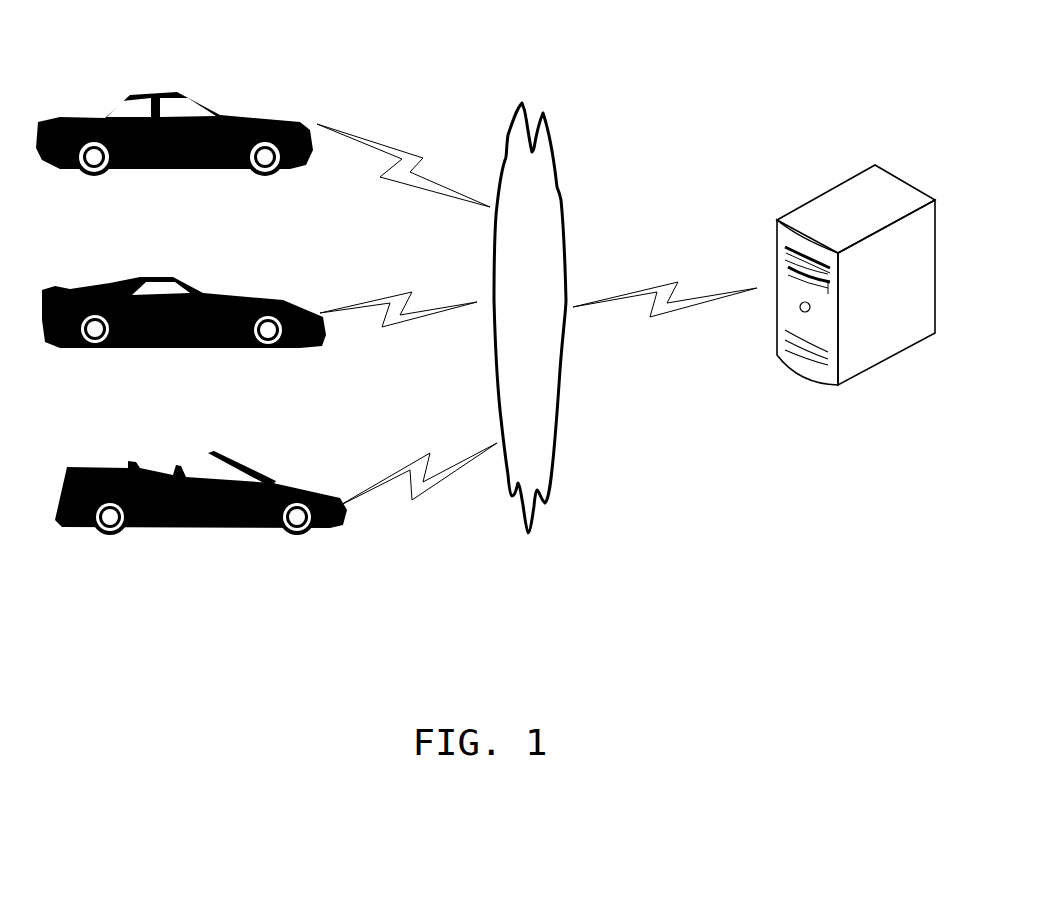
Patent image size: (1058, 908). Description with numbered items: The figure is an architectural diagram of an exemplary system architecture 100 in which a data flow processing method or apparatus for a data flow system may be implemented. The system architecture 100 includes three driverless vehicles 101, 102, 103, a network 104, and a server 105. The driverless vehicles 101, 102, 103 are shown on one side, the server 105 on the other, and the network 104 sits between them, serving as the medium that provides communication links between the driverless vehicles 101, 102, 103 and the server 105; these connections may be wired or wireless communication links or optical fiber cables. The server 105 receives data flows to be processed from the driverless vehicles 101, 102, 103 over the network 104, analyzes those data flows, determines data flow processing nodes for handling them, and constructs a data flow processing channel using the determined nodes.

The system architecture 100 is at (848, 41).
The driverless vehicle 101 is at (288, 121).
The driverless vehicle 102 is at (293, 303).
The driverless vehicle 103 is at (307, 483).
The network 104 is at (567, 220).
The server 105 is at (777, 339).